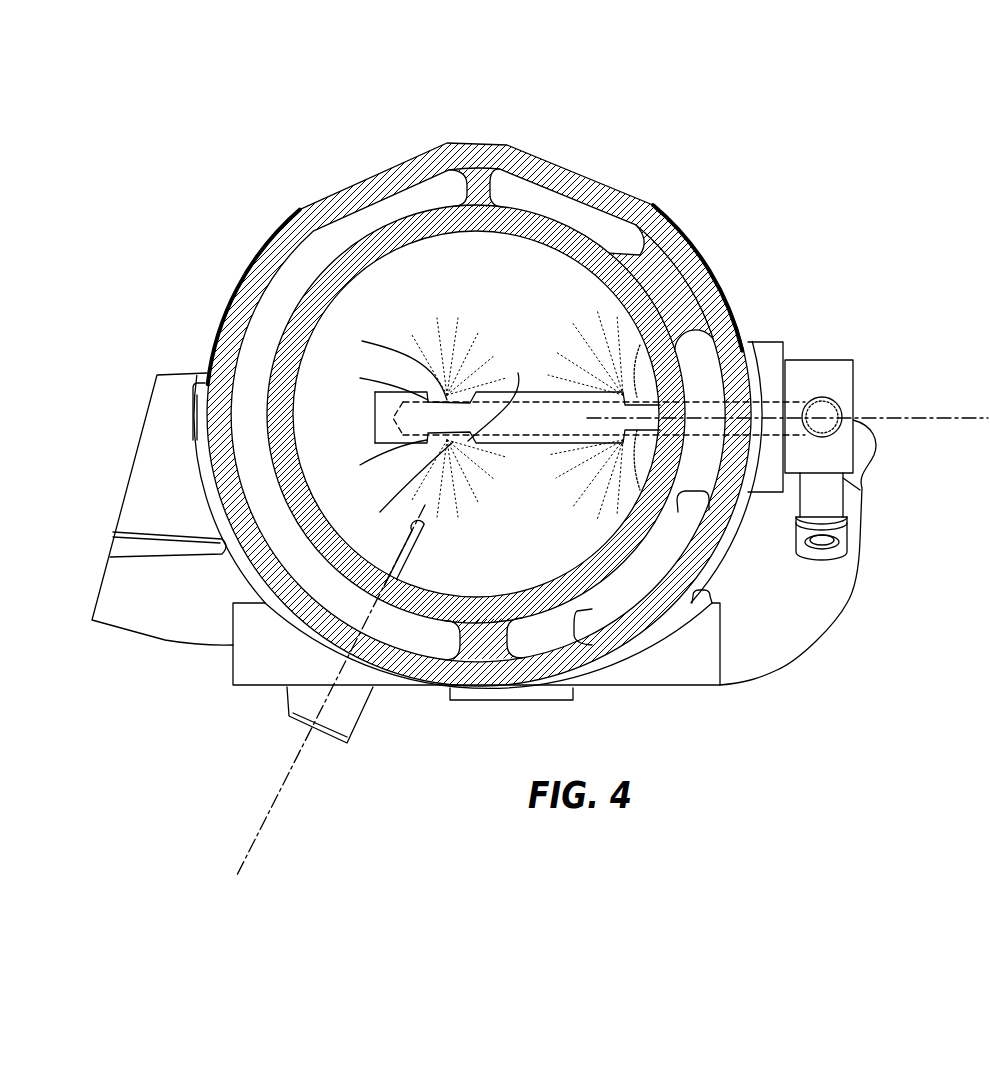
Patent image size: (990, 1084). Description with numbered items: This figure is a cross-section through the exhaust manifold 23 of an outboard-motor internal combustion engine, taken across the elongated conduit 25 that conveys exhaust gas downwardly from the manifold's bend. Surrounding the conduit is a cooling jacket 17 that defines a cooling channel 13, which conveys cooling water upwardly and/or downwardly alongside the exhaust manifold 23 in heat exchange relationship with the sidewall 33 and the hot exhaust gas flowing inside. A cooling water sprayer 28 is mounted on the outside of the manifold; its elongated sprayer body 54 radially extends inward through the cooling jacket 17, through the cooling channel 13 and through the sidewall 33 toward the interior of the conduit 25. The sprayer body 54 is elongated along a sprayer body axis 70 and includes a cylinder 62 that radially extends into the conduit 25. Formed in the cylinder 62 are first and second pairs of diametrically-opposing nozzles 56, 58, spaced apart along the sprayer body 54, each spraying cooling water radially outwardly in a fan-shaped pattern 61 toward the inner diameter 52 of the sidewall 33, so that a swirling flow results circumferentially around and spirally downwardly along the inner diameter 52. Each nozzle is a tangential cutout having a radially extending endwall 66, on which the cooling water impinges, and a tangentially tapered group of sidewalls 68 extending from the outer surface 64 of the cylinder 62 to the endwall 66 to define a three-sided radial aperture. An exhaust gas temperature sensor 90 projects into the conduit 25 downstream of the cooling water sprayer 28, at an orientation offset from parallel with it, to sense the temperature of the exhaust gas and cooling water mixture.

The cooling channel 13 is at (412, 203).
The cooling jacket 17 is at (350, 185).
The exhaust manifold 23 is at (792, 167).
The elongated conduit 25 is at (550, 212).
The cooling water sprayer 28 is at (852, 335).
The sidewall 33 is at (313, 277).
The inner diameter 52 is at (485, 242).
The sprayer body 54 is at (535, 452).
The first pair of diametrically-opposing nozzles 56 is at (391, 429).
The second pair of diametrically-opposing nozzles 58 is at (653, 348).
The fan-shaped pattern 61 is at (432, 345).
The cylinder 62 is at (560, 400).
The outer surface 64 is at (508, 446).
The endwall 66 is at (377, 424).
The tangentially tapered group of sidewalls 68 is at (750, 553).
The sprayer body axis 70 is at (925, 415).
The exhaust gas temperature sensor 90 is at (340, 718).